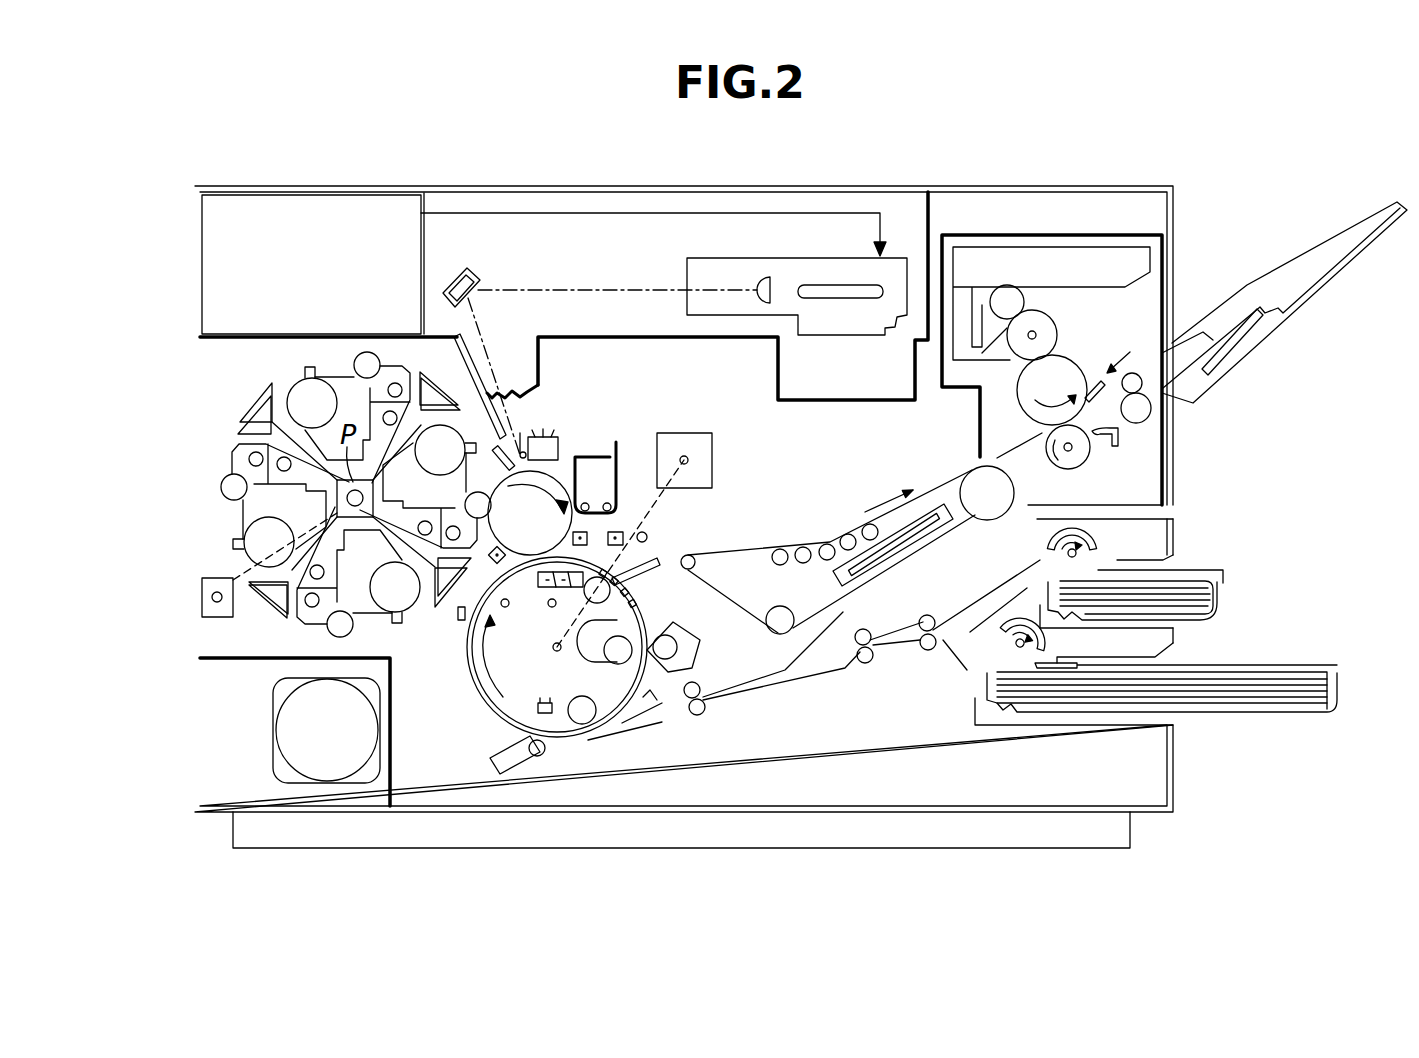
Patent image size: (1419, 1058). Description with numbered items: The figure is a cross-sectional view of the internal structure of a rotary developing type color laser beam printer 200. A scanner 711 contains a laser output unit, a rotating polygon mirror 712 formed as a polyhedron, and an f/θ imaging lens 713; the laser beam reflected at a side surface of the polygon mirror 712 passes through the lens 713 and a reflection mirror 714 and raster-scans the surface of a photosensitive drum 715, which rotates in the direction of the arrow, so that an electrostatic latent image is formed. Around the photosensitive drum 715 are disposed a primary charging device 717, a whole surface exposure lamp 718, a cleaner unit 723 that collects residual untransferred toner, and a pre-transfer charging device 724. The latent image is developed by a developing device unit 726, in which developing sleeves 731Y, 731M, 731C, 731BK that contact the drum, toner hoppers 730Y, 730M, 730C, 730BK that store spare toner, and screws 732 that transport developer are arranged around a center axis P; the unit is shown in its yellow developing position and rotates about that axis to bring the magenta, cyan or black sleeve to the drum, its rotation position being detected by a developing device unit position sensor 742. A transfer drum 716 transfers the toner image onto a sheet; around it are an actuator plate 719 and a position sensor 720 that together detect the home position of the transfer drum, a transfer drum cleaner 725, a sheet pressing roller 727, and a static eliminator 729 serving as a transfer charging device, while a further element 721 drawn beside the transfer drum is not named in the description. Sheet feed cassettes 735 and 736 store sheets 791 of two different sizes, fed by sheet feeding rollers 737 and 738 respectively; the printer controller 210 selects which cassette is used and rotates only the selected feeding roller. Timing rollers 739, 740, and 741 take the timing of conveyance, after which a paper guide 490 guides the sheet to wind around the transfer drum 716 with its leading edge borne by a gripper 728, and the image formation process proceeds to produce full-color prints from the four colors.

The image forming apparatus 200 is at (1185, 203).
The printer controller 210 is at (224, 318).
The scanner 711 is at (800, 258).
The polygon mirror 712 is at (838, 300).
The f/θ lens 713 is at (757, 285).
The reflection mirror 714 is at (498, 252).
The photosensitive drum 715 is at (572, 520).
The transfer drum 716 is at (492, 625).
The primary charging device 717 is at (556, 437).
The whole surface exposure lamp 718 is at (530, 455).
The actuator plate 719 is at (487, 705).
The position sensor 720 is at (497, 728).
The cleaning roller 721 is at (515, 778).
The cleaner unit 723 is at (605, 500).
The pre-transfer charging device 724 is at (488, 562).
The transfer drum cleaner 725 is at (618, 662).
The developing device unit 726 is at (250, 413).
The sheet pressing roller 727 is at (680, 648).
The gripper 728 is at (553, 713).
The static eliminator 729 is at (608, 592).
The black toner hopper 730BK is at (300, 410).
The black developing sleeve 731BK is at (368, 362).
The yellow toner hopper 730Y is at (452, 437).
The yellow developing sleeve 731Y is at (476, 492).
The cyan toner hopper 730C is at (262, 540).
The cyan developing sleeve 731C is at (230, 485).
The magenta toner hopper 730M is at (393, 590).
The magenta developing sleeve 731M is at (336, 622).
The screws 732 is at (392, 416).
The developing device unit position sensor 742 is at (215, 597).
The paper guide 490 is at (662, 722).
The timing roller 741 is at (702, 712).
The timing roller 740 is at (864, 663).
The timing roller 739 is at (929, 650).
The sheet feeding roller 737 is at (1100, 555).
The sheet feeding roller 738 is at (1010, 645).
The sheet feed cassette 735 is at (1195, 570).
The sheet feed cassette 736 is at (1273, 667).
The paper leaf 791 is at (1223, 677).